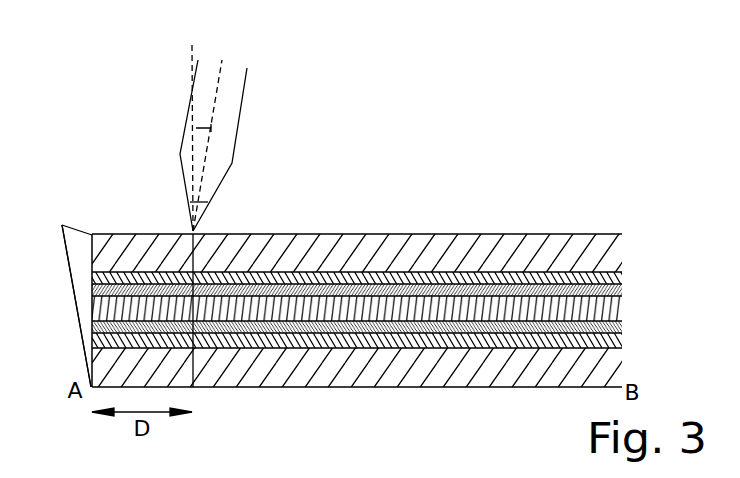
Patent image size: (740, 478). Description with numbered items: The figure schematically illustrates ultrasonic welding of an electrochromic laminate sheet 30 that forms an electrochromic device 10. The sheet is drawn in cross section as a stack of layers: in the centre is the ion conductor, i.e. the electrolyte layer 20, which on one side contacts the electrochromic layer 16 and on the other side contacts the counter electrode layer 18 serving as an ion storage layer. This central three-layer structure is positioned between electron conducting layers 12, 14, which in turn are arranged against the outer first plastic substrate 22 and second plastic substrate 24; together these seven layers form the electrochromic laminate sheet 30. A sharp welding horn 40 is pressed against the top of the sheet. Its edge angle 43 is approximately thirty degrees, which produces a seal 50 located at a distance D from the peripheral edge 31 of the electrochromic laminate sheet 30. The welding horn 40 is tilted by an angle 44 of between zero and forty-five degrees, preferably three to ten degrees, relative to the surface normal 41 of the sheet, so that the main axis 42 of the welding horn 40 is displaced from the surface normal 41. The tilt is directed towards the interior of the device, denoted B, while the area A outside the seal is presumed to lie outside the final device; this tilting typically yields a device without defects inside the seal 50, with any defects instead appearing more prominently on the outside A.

The electrochromic device 10 is at (383, 264).
The electron conducting layer 12 is at (342, 268).
The electron conducting layer 14 is at (391, 348).
The electrochromic layer 16 is at (413, 270).
The counter electrode layer 18 is at (456, 343).
The electrolyte layer 20 is at (621, 310).
The first plastic substrate 22 is at (283, 258).
The second plastic substrate 24 is at (330, 375).
The electrochromic laminate sheet 30 is at (62, 225).
The peripheral edge 31 is at (78, 308).
The welding horn 40 is at (180, 154).
The surface normal 41 is at (190, 45).
The main axis 42 is at (222, 60).
The edge angle 43 is at (190, 202).
The tilting angle 44 is at (196, 128).
The seal 50 is at (193, 375).